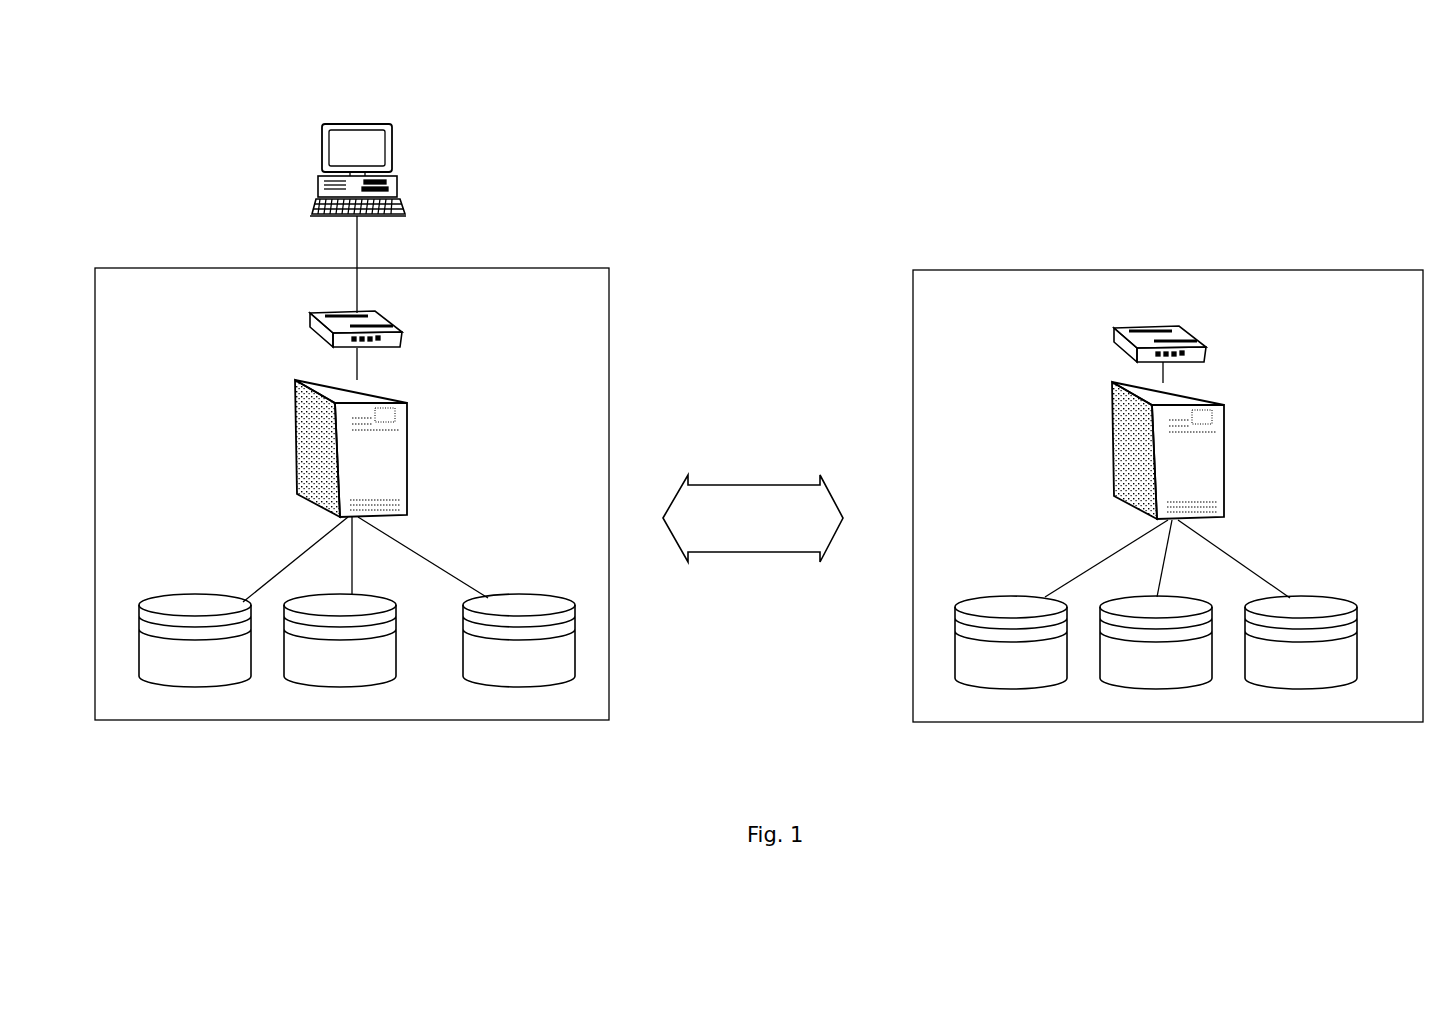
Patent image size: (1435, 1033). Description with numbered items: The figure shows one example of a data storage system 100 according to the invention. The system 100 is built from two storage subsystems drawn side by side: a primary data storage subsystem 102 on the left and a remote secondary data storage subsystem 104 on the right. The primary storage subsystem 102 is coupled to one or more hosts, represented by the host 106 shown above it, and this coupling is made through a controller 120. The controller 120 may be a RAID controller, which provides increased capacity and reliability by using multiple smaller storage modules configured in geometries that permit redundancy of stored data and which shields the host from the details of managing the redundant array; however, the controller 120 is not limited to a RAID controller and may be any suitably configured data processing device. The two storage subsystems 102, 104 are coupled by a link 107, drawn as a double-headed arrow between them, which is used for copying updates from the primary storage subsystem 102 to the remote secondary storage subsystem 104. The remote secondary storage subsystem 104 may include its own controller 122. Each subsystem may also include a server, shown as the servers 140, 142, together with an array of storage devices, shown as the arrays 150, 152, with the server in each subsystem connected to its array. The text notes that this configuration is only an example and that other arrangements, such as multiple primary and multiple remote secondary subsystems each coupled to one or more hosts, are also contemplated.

The data storage system 100 is at (853, 123).
The primary data storage subsystem 102 is at (147, 262).
The remote secondary data storage subsystem 104 is at (1197, 267).
The host 106 is at (395, 178).
The link 107 is at (740, 488).
The controller 120 is at (413, 330).
The controller 122 is at (1127, 345).
The server 140 is at (402, 442).
The server 142 is at (1107, 433).
The array 150 is at (357, 702).
The array 152 is at (1095, 702).